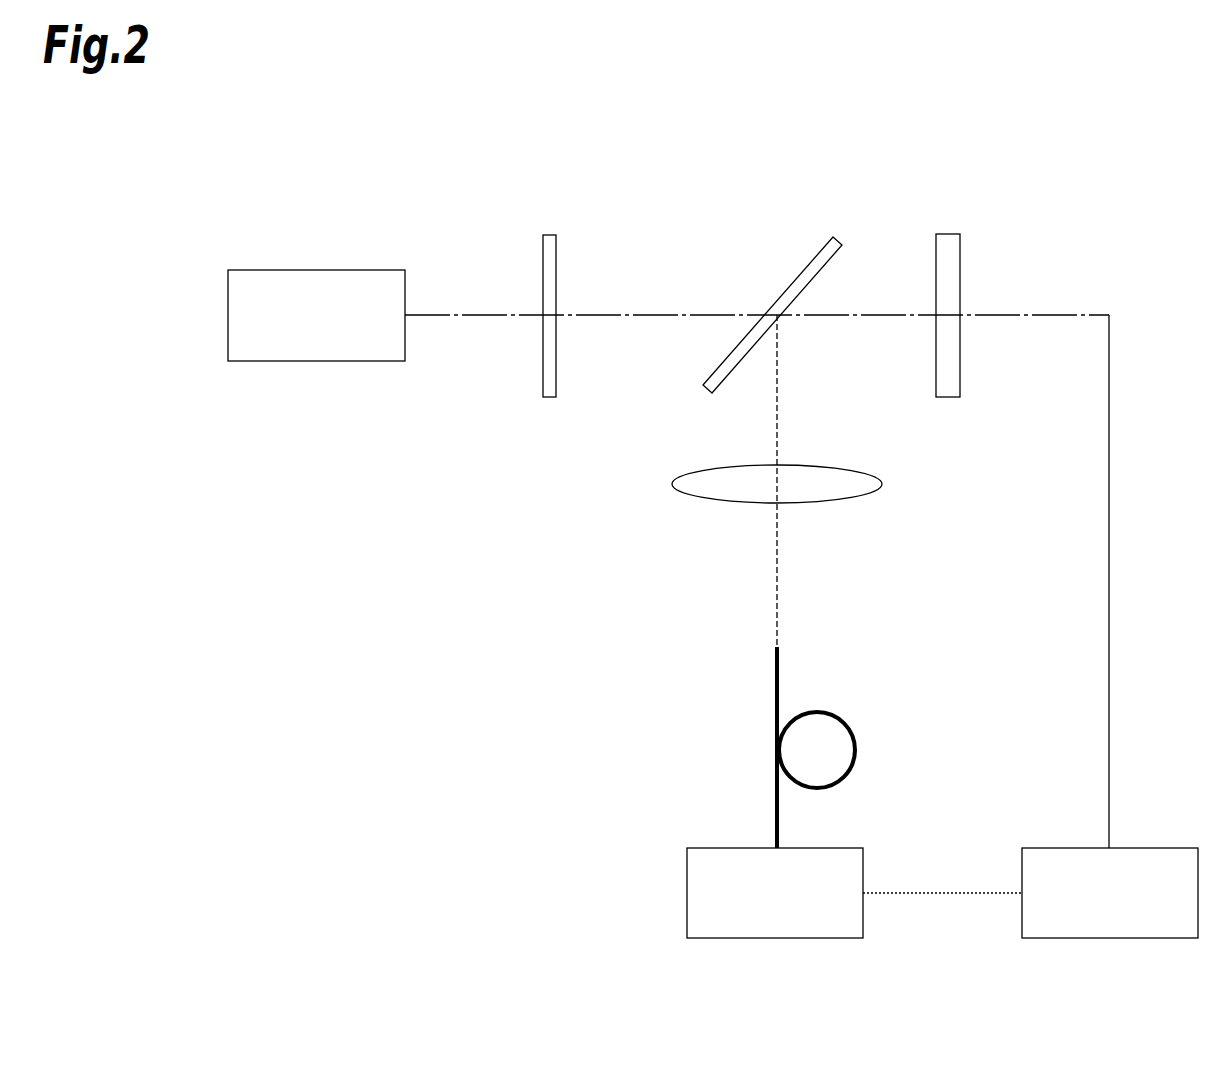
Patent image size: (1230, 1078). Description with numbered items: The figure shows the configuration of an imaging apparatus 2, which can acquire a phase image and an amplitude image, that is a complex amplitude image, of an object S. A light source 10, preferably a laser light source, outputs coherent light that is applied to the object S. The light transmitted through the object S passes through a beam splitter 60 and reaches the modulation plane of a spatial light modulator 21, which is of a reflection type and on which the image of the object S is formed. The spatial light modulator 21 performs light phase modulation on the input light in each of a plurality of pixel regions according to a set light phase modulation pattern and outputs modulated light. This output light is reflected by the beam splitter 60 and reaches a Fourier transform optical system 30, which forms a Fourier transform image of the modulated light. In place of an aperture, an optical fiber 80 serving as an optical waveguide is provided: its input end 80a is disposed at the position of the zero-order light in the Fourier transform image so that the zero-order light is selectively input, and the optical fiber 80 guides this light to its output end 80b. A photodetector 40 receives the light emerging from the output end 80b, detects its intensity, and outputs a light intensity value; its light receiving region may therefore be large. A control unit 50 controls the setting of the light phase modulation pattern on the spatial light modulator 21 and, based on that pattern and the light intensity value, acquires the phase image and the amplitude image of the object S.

The imaging apparatus 2 is at (705, 153).
The light source 10 is at (325, 270).
The object S is at (550, 235).
The beam splitter 60 is at (840, 238).
The spatial light modulator 21 is at (950, 234).
The Fourier transform optical system 30 is at (844, 500).
The optical fiber 80 is at (852, 723).
The input end 80a is at (778, 648).
The output end 80b is at (779, 847).
The photodetector 40 is at (707, 847).
The control unit 50 is at (1177, 847).